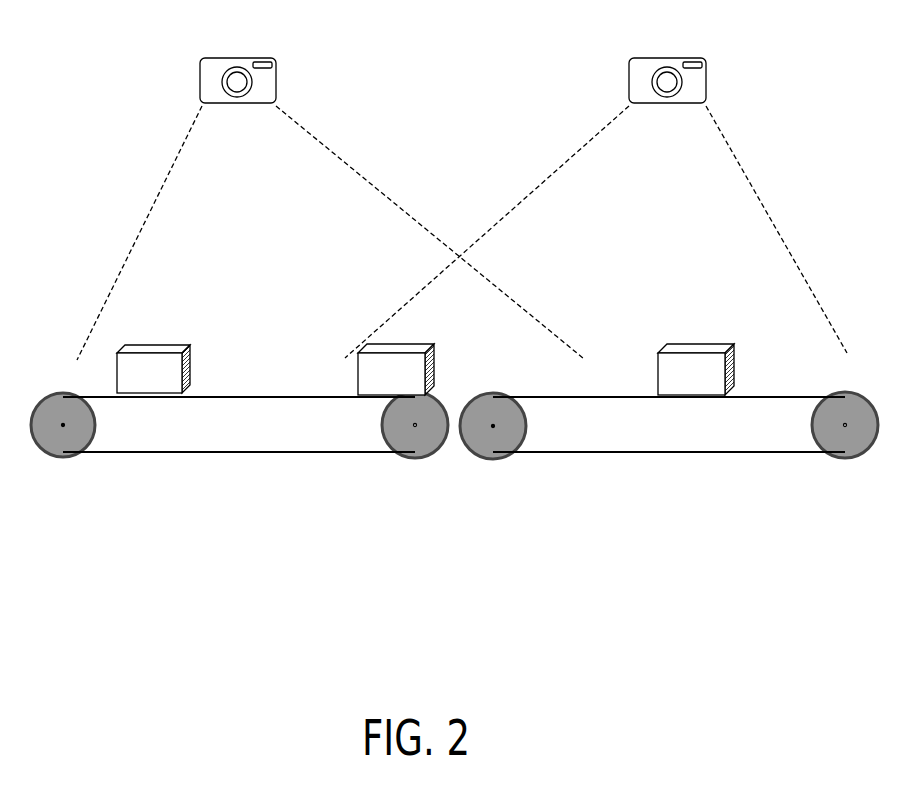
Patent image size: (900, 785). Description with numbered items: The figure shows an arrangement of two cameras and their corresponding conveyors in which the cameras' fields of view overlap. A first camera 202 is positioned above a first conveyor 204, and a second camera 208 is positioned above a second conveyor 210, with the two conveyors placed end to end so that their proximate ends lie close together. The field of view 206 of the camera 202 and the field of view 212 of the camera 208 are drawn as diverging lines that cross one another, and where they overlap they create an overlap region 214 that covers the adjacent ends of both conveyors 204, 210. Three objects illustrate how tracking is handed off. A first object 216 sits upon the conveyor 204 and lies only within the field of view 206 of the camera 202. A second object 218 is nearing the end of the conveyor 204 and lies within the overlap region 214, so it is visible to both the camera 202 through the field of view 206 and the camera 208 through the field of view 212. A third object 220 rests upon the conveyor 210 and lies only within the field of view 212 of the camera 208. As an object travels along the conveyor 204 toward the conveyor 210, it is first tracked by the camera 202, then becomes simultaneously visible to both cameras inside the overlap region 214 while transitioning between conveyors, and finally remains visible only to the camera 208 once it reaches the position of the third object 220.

The camera 202 is at (209, 62).
The conveyor 204 is at (247, 438).
The field of view 206 is at (151, 186).
The camera 208 is at (638, 62).
The conveyor 210 is at (675, 441).
The field of view 212 is at (549, 166).
The overlap region 214 is at (445, 301).
The first object 216 is at (176, 350).
The second object 218 is at (380, 350).
The third object 220 is at (716, 350).